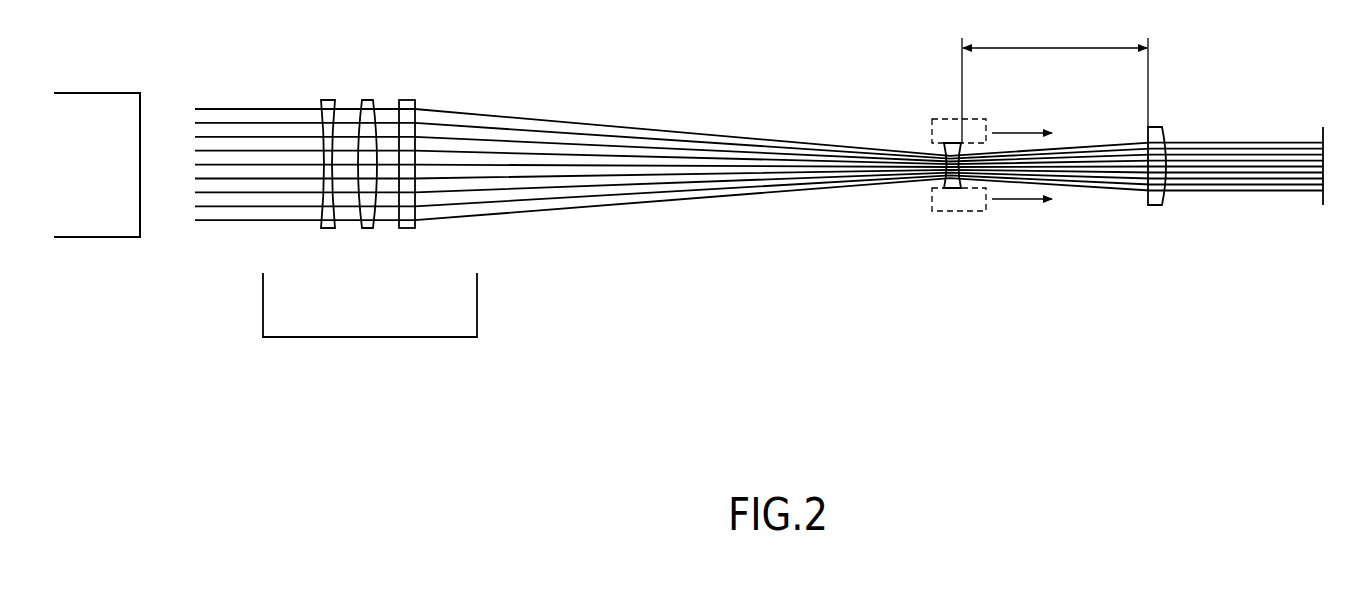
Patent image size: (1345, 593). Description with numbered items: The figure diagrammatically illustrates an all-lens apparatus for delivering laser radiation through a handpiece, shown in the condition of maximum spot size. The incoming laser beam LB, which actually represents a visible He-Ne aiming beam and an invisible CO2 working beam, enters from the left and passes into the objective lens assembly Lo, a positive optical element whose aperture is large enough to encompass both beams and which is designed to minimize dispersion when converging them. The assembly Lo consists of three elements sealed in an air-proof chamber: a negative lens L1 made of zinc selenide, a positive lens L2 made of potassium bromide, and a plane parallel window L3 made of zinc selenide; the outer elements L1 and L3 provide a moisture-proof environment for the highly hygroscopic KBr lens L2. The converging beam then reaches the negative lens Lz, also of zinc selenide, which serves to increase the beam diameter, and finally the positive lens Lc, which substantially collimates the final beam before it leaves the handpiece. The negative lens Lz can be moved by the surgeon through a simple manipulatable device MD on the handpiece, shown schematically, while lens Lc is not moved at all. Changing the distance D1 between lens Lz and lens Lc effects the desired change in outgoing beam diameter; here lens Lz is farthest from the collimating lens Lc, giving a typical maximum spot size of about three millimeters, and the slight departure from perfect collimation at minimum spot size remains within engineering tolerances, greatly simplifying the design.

The laser beam LB is at (90, 223).
The negative lens L1 is at (328, 228).
The positive lens L2 is at (367, 228).
The plane parallel window L3 is at (406, 228).
The objective lens assembly Lo is at (412, 272).
The negative lens Lz is at (957, 188).
The manipulatable device MD is at (935, 137).
The distance D1 is at (1055, 79).
The positive lens Lc is at (1155, 205).